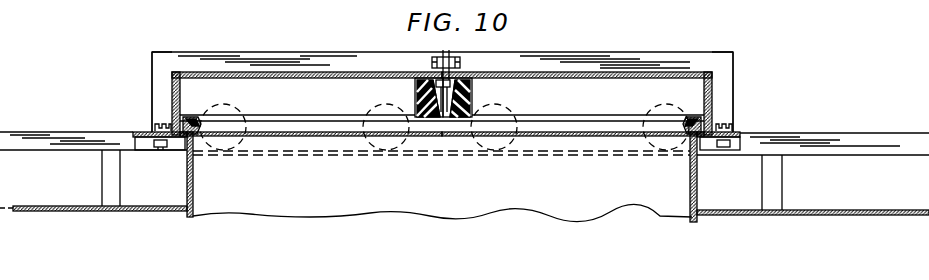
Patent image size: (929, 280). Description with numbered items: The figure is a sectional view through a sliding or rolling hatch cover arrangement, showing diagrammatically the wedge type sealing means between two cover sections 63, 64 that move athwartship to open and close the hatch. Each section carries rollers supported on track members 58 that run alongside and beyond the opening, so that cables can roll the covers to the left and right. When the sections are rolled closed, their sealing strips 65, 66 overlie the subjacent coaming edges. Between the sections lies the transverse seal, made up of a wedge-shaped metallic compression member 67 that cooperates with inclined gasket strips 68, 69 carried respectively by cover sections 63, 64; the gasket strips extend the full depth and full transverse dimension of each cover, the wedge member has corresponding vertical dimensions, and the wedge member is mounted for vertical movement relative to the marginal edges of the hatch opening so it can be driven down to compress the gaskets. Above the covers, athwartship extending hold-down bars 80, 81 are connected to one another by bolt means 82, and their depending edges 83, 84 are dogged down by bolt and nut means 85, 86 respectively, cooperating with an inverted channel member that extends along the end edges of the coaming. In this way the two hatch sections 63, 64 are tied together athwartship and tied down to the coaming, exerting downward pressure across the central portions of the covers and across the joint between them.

The track member 58 is at (48, 149).
The cover section 63 is at (303, 108).
The cover section 64 is at (588, 109).
The sealing strip 65 is at (190, 121).
The sealing strip 66 is at (693, 122).
The wedge-shaped metallic compression member 67 is at (472, 119).
The inclined gasket strip 68 is at (415, 94).
The inclined gasket strip 69 is at (472, 95).
The athwartship extending hold-down bar 80 is at (297, 61).
The athwartship extending hold-down bar 81 is at (566, 62).
The bolt means 82 is at (460, 61).
The depending edge 83 is at (160, 76).
The depending edge 84 is at (725, 89).
The bolt and nut means 85 is at (158, 118).
The bolt and nut means 86 is at (727, 128).